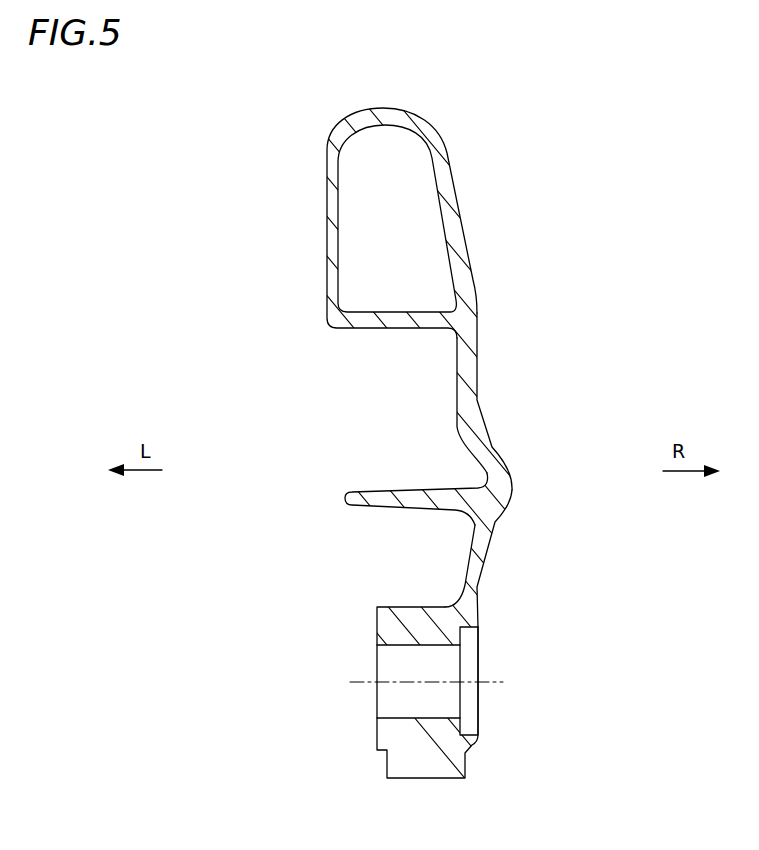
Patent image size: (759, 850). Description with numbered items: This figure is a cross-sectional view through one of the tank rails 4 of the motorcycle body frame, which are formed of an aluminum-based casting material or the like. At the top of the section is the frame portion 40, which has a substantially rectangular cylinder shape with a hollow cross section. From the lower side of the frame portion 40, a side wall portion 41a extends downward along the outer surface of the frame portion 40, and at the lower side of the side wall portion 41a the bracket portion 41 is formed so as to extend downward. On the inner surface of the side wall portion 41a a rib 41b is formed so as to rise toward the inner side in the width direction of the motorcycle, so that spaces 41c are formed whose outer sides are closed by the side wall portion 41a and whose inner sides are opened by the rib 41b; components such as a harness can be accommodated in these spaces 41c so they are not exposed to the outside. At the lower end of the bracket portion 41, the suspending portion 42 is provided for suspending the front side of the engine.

The tank rail 4 is at (610, 195).
The frame portion 40 is at (447, 183).
The bracket portion 41 is at (470, 565).
The side wall portion 41a is at (467, 415).
The rib 41b is at (375, 492).
The space 41c is at (396, 380).
The suspending portion 42 is at (468, 743).